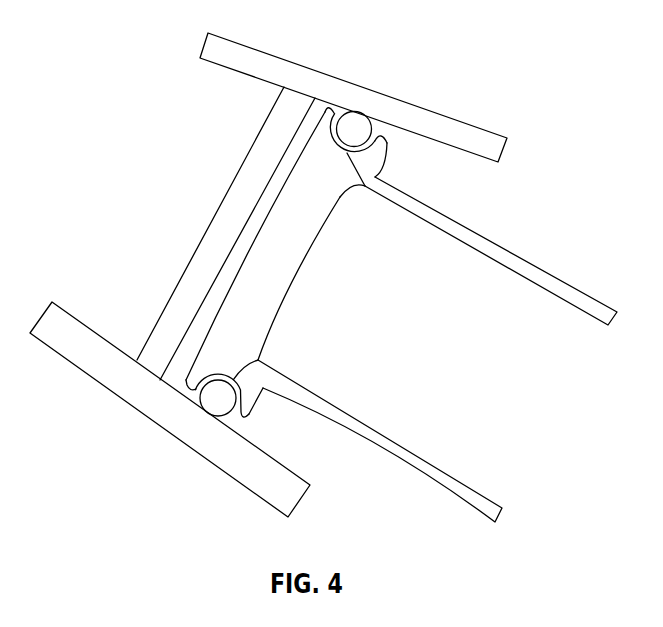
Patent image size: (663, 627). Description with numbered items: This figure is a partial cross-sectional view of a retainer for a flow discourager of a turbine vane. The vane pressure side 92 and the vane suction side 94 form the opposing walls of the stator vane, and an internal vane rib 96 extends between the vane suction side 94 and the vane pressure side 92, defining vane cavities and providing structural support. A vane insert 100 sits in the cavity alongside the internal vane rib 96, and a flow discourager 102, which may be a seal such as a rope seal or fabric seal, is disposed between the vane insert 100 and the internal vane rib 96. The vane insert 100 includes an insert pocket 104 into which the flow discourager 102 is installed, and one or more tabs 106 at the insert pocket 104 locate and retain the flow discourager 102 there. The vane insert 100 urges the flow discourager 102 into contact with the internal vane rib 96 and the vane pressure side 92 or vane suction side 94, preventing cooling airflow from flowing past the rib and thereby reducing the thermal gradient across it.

The vane pressure side 92 is at (250, 481).
The vane suction side 94 is at (463, 134).
The internal vane rib 96 is at (223, 239).
The vane insert 100 is at (267, 294).
The flow discourager 102 is at (354, 129).
The insert pocket 104 is at (365, 189).
The tab 106 is at (329, 112).